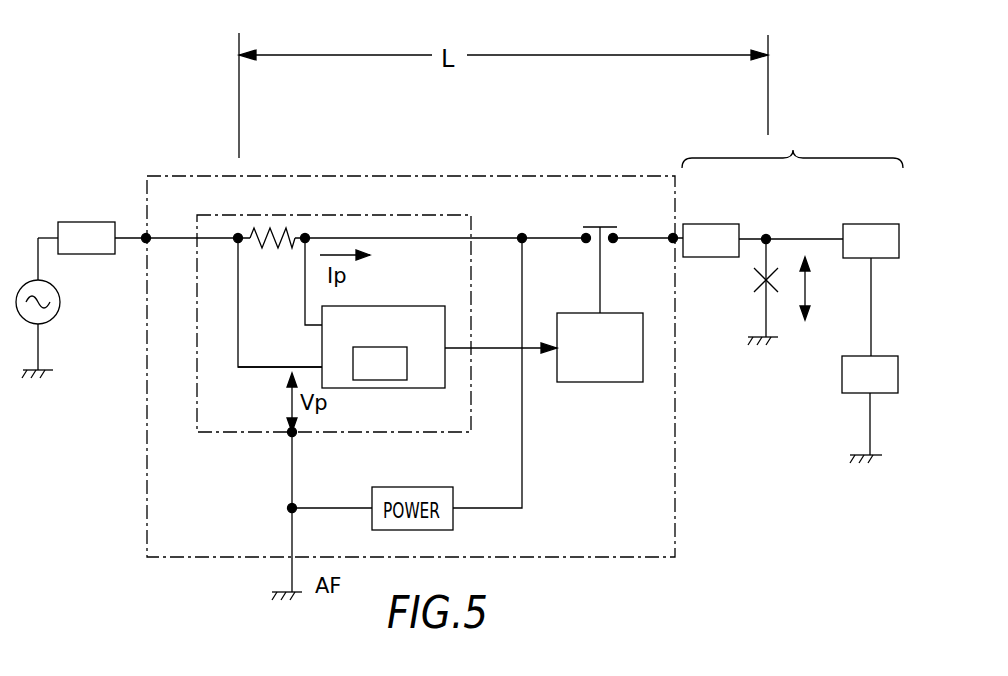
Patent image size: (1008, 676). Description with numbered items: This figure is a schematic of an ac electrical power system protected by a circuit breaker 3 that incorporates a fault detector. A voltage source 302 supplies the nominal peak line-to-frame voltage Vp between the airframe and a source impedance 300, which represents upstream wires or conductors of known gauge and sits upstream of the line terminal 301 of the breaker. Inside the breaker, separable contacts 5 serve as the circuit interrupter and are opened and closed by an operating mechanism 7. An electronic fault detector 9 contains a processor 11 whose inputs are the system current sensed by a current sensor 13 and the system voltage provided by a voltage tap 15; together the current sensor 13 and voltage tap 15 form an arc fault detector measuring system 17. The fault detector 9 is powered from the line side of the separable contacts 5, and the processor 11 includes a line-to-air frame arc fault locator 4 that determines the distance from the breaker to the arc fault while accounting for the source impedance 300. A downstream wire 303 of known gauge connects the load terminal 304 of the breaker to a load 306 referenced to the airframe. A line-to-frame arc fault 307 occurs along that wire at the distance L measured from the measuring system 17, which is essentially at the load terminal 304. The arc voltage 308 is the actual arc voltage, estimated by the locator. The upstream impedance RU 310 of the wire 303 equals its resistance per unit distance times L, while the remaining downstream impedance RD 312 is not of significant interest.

The circuit breaker 3 is at (202, 176).
The line-to-air frame arc fault locator 4 is at (407, 372).
The separable contacts 5 is at (598, 226).
The operating mechanism 7 is at (630, 313).
The electronic fault detector 9 is at (474, 257).
The processor 11 is at (362, 305).
The current sensor 13 is at (268, 232).
The voltage tap 15 is at (233, 242).
The arc fault detector measuring system 17 is at (270, 370).
The source impedance 300 is at (87, 222).
The line terminal 301 is at (144, 236).
The voltage source 302 is at (60, 293).
The downstream wire 303 is at (792, 144).
The load terminal 304 is at (672, 235).
The load 306 is at (842, 363).
The line-to-frame arc fault 307 is at (760, 283).
The arc voltage VARC 308 is at (807, 282).
The upstream impedance RU 310 is at (720, 224).
The remaining downstream impedance RD 312 is at (863, 225).